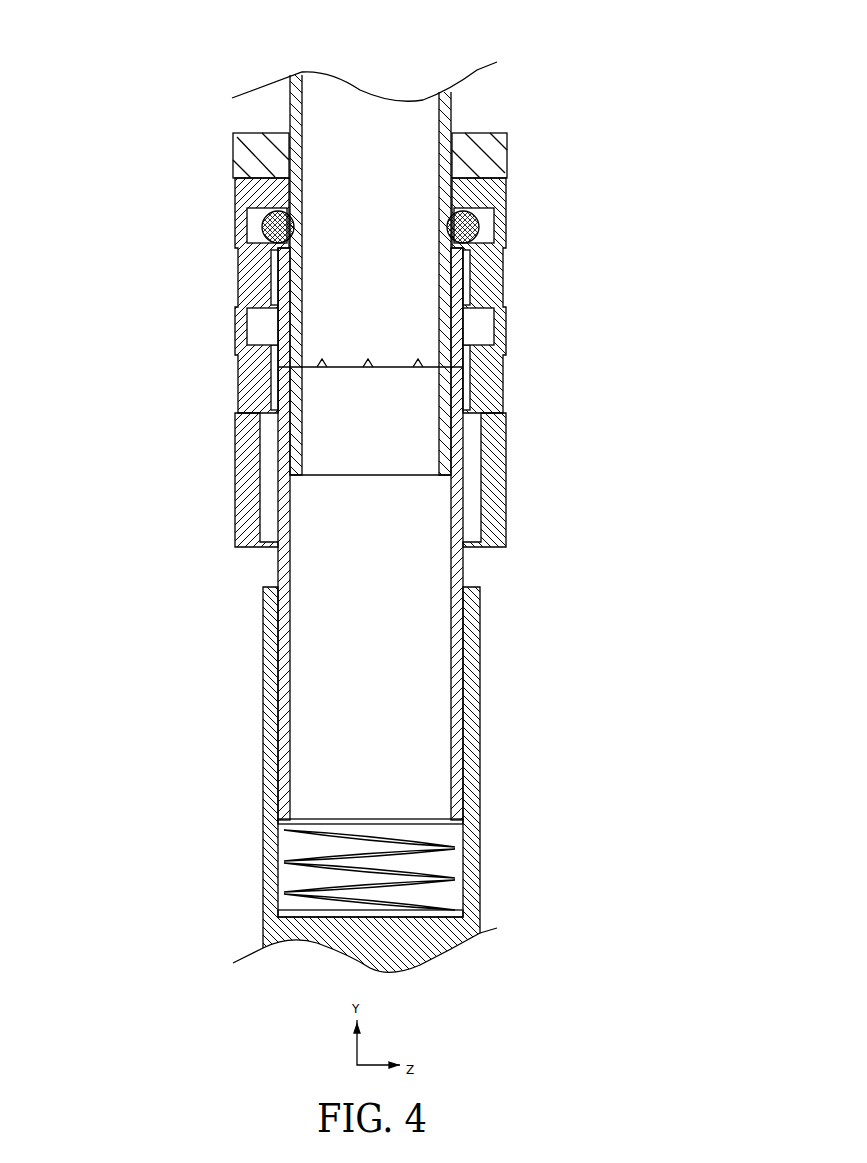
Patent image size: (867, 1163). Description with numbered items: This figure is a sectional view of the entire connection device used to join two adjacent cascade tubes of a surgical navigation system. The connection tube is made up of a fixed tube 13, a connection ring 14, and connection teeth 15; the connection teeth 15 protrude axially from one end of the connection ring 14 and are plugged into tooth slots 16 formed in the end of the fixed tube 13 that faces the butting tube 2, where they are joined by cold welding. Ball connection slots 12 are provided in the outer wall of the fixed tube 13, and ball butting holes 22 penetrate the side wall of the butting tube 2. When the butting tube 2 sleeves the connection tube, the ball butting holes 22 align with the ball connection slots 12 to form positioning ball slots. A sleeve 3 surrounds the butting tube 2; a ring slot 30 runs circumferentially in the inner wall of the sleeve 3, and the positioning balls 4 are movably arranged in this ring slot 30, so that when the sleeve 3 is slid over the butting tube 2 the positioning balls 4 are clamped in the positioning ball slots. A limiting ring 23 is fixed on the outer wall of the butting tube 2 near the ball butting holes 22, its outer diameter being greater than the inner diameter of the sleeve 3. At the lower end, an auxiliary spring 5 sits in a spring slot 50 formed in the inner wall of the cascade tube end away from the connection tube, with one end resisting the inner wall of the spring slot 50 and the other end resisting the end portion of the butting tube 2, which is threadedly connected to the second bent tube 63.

The butting tube 2 is at (280, 622).
The sleeve 3 is at (487, 422).
The positioning balls 4 is at (260, 220).
The auxiliary spring 5 is at (397, 853).
The ball connection slots 12 is at (275, 177).
The fixed tube 13 is at (287, 80).
The connection ring 14 is at (287, 420).
The connection teeth 15 is at (325, 362).
The tooth slots 16 is at (468, 322).
The ball butting holes 22 is at (467, 130).
The limiting ring 23 is at (508, 142).
The ring slot 30 is at (417, 362).
The spring slot 50 is at (432, 897).
The second bent tube 63 is at (278, 820).